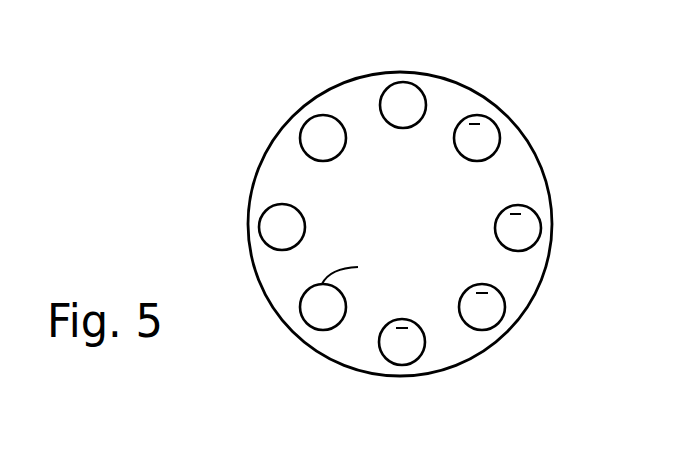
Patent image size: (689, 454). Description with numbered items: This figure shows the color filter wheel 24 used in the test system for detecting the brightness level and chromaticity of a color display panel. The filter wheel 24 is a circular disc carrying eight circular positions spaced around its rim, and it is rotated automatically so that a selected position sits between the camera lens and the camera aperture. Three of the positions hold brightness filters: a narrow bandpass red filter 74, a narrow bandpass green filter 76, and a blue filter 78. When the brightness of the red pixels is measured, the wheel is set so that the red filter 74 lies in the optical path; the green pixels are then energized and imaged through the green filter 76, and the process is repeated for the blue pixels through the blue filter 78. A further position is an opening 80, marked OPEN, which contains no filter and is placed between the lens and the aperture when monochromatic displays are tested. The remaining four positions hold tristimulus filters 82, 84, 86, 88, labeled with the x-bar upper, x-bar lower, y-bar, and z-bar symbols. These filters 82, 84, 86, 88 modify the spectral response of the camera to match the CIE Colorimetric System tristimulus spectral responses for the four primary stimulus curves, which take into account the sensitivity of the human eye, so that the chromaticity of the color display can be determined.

The filter wheel 24 is at (527, 167).
The narrow bandpass red filter 74 is at (282, 204).
The narrow bandpass green filter 76 is at (323, 115).
The blue filter 78 is at (405, 77).
The opening 80 is at (301, 313).
The tristimulus filter 82 is at (478, 115).
The tristimulus filter 84 is at (541, 229).
The tristimulus filter 86 is at (505, 307).
The tristimulus filter 88 is at (425, 348).